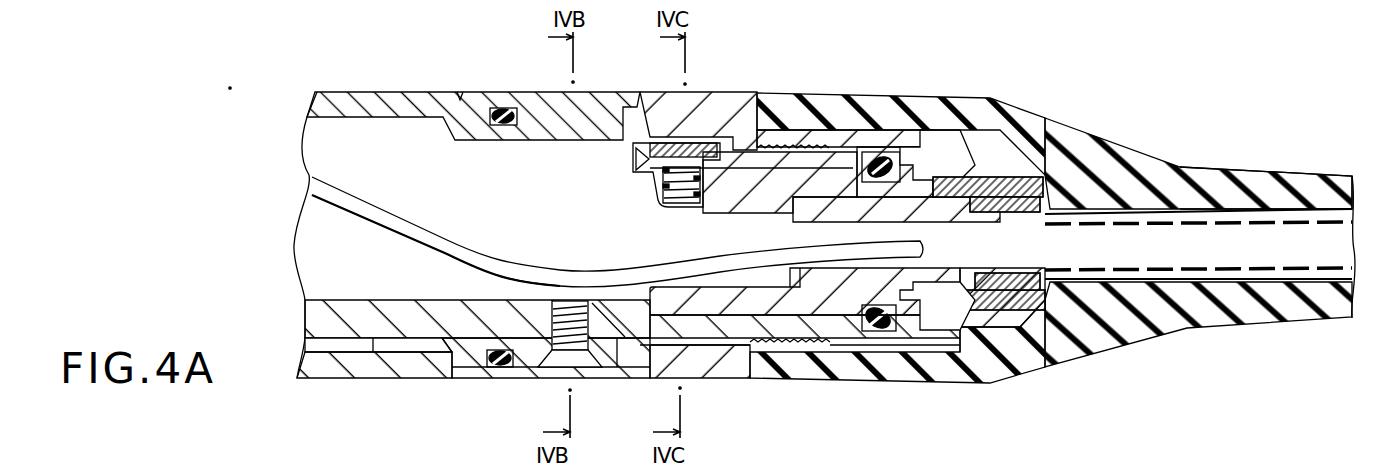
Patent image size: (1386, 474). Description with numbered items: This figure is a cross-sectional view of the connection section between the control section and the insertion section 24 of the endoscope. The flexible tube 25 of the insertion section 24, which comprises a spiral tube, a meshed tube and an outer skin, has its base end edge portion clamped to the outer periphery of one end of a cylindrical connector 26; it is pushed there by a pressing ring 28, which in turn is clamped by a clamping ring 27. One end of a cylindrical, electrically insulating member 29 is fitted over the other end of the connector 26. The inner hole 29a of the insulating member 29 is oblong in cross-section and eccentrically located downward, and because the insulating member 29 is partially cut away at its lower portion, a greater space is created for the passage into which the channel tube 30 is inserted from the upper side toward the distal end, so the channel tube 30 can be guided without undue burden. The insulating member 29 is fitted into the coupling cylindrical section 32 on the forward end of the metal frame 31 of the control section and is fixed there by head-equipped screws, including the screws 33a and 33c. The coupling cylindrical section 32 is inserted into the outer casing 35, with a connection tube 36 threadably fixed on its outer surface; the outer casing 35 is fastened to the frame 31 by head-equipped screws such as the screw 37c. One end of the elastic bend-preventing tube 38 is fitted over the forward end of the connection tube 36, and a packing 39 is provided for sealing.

The insertion section 24 is at (953, 93).
The flexible tube 25 is at (1260, 277).
The cylindrical connector 26 is at (980, 275).
The clamping ring 27 is at (1020, 177).
The pressing ring 28 is at (1030, 195).
The insulating member 29 is at (753, 177).
The inner hole 29a is at (763, 283).
The channel tube 30 is at (450, 242).
The metal frame 31 is at (380, 325).
The coupling cylindrical section 32 is at (717, 327).
The head-equipped screw 33a is at (882, 469).
The head-equipped screw 33c is at (667, 152).
The outer casing 35 is at (368, 90).
The connection tube 36 is at (603, 380).
The head-equipped screw 37c is at (557, 357).
The bend-preventing tube 38 is at (1317, 185).
The packing 39 is at (502, 108).